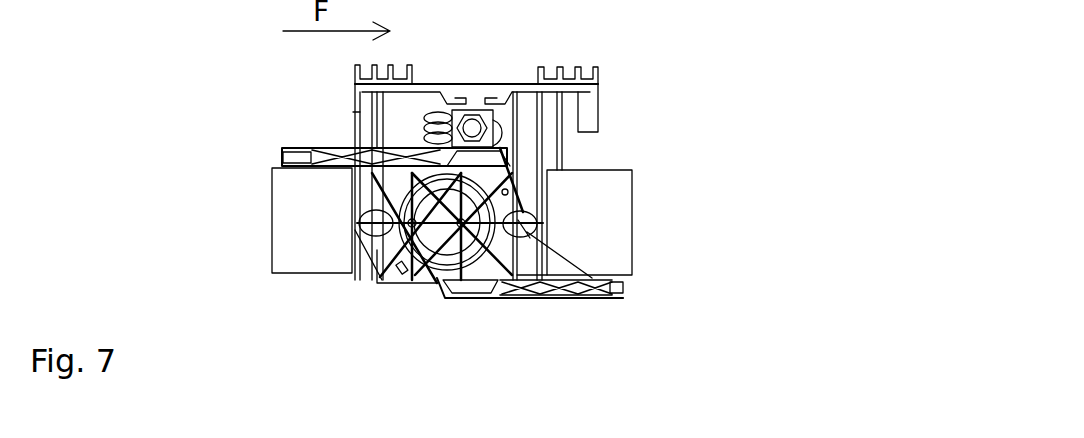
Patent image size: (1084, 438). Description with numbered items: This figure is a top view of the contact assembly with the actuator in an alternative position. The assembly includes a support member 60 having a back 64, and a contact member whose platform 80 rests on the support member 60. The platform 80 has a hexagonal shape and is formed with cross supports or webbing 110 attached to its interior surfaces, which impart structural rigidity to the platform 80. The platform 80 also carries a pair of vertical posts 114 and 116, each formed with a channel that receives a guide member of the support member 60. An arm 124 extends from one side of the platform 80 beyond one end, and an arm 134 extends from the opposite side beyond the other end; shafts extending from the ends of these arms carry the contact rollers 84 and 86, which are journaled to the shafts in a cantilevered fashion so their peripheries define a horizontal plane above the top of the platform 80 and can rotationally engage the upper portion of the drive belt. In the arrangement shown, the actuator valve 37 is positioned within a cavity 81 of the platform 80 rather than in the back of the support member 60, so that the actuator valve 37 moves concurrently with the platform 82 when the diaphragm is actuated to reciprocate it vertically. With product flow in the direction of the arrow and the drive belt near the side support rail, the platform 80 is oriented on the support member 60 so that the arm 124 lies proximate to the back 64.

The actuator valve 37 is at (493, 143).
The support member 60 is at (353, 112).
The back 64 is at (538, 73).
The platform 80 is at (498, 300).
The cavity 81 is at (415, 148).
The platform 82 is at (437, 290).
The contact roller 84 is at (293, 227).
The contact roller 86 is at (597, 202).
The webbing 110 is at (542, 300).
The vertical post 114 is at (373, 227).
The vertical post 116 is at (617, 300).
The arm 124 is at (293, 157).
The arm 134 is at (617, 284).